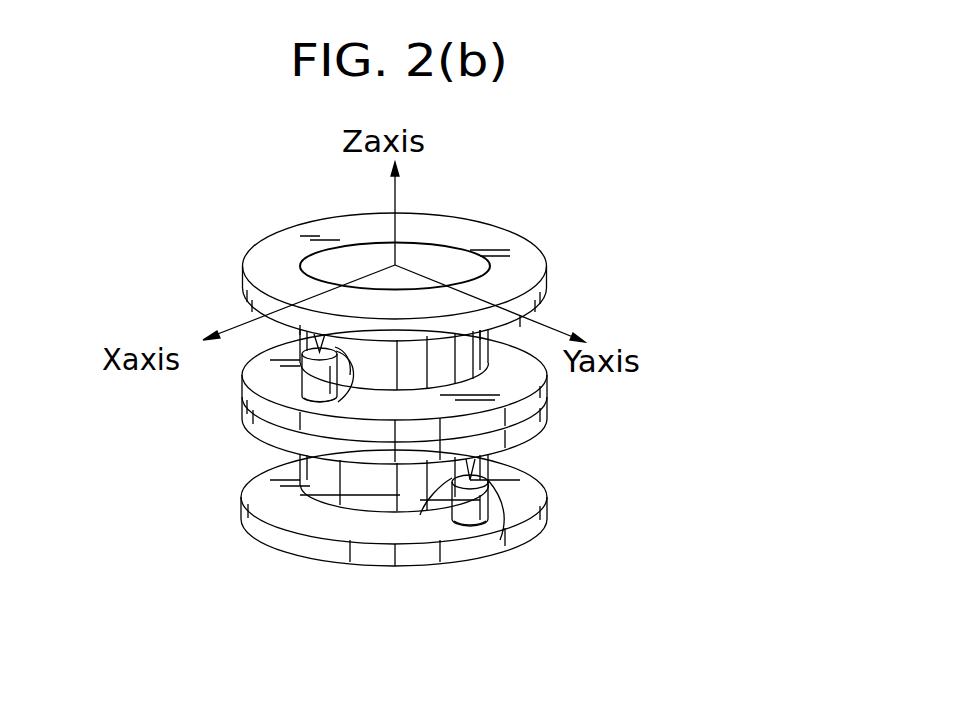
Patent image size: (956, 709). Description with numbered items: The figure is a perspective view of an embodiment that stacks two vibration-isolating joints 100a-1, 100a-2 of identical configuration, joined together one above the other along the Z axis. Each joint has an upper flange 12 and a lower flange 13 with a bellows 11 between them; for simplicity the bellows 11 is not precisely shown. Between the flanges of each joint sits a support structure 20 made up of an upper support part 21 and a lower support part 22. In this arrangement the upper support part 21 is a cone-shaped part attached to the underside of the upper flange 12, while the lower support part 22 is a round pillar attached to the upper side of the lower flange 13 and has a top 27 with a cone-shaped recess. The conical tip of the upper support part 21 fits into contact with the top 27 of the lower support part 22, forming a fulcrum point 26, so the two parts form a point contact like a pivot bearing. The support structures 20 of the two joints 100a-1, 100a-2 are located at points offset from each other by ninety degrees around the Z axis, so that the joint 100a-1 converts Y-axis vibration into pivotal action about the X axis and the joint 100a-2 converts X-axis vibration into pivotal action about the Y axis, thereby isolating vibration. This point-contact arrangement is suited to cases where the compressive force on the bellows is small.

The bellows 11 is at (478, 362).
The upper flange 12 is at (543, 294).
The lower flange 13 is at (545, 394).
The support structure 20 is at (172, 385).
The upper support part 21 is at (303, 353).
The lower support part 22 is at (315, 395).
The fulcrum point 26 is at (312, 378).
The top 27 is at (330, 402).
The vibration-isolating joint 100a-1 is at (658, 253).
The vibration-isolating joint 100a-2 is at (658, 408).